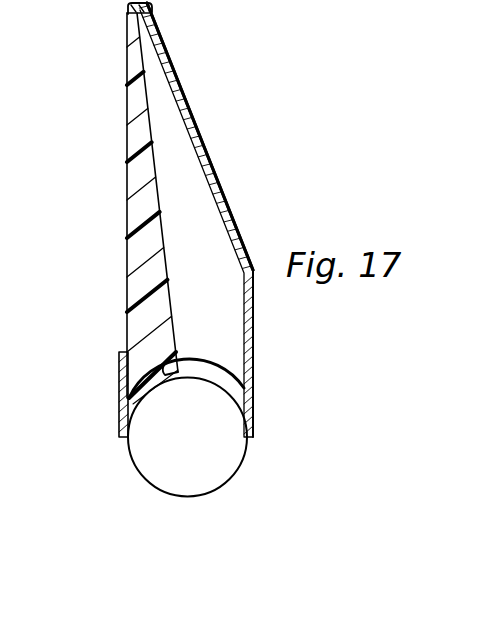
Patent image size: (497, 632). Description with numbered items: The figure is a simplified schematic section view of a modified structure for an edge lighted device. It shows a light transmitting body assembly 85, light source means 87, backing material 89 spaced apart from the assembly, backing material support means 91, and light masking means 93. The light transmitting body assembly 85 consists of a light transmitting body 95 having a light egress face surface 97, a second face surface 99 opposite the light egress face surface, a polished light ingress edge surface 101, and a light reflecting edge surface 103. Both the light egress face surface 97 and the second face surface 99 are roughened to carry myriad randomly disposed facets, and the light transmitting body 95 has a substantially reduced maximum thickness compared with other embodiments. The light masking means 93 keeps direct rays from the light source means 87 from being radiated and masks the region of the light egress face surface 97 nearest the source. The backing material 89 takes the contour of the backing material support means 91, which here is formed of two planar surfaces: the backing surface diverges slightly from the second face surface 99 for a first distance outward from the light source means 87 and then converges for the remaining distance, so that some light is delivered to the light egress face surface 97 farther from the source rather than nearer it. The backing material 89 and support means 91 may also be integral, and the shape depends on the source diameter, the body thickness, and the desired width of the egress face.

The light transmitting body assembly 85 is at (127, 228).
The light source means 87 is at (194, 497).
The backing material 89 is at (215, 211).
The backing material support means 91 is at (192, 120).
The light masking means 93 is at (118, 404).
The light transmitting body 95 is at (127, 130).
The light egress face surface 97 is at (127, 314).
The second face surface 99 is at (176, 308).
The polished light ingress edge surface 101 is at (238, 382).
The light reflecting edge surface 103 is at (128, 31).